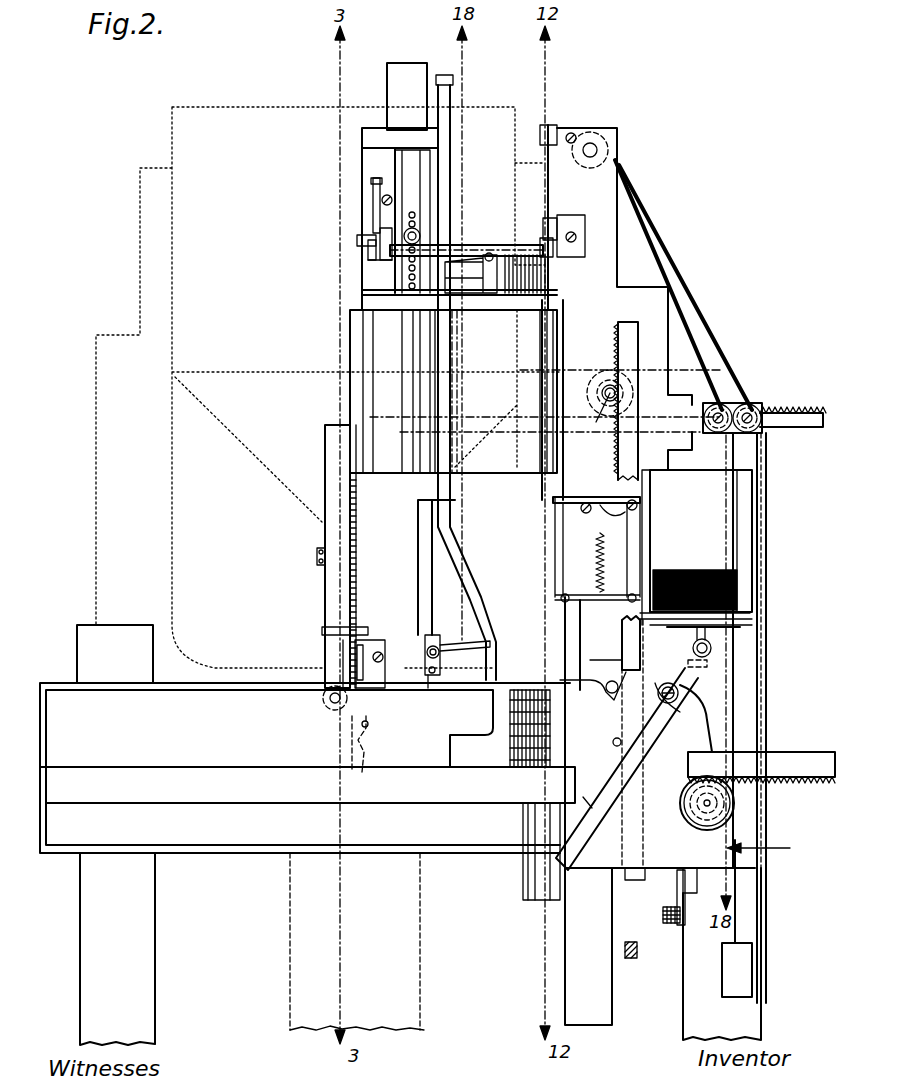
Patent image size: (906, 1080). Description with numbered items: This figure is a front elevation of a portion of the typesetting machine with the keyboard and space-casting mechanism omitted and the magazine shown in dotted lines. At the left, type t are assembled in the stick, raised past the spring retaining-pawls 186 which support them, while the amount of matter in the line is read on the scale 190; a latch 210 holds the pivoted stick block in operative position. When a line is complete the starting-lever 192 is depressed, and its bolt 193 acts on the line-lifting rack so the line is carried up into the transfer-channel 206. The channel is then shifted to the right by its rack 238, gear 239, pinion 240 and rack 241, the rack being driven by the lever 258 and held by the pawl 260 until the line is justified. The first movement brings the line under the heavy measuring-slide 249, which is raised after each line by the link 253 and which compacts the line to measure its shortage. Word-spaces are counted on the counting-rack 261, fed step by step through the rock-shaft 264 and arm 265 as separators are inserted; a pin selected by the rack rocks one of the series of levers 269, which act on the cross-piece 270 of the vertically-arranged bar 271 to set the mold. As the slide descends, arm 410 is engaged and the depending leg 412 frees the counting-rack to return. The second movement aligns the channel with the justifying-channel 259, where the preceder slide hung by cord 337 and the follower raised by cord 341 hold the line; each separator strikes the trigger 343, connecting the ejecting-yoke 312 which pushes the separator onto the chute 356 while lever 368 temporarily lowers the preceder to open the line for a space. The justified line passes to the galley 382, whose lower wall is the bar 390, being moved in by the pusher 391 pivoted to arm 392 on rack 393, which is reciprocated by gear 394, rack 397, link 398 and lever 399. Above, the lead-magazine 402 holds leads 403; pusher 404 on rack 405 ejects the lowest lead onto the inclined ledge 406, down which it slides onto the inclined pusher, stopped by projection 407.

The type t is at (508, 750).
The spring retaining-pawls 186 is at (352, 628).
The scale 190 is at (352, 581).
The starting-lever 192 is at (458, 641).
The bolt 193 is at (427, 676).
The transfer-channel 206 is at (548, 322).
The latch 210 is at (317, 555).
The rack 238 is at (800, 402).
The gear 239 is at (604, 380).
The pinion 240 is at (608, 415).
The rack 241 is at (630, 343).
The measuring-slide 249 is at (398, 65).
The link 253 is at (452, 97).
The lever 258 is at (632, 962).
The justifying-channel 259 is at (563, 592).
The pawl 260 is at (616, 678).
The counting-rack 261 is at (370, 234).
The rock-shaft 264 is at (489, 250).
The arm 265 is at (384, 248).
The levers 269 is at (470, 258).
The cross-piece 270 is at (576, 237).
The vertically-arranged bar 271 is at (552, 182).
The ejecting-yoke 312 is at (590, 497).
The cord 337 is at (693, 322).
The cord 341 is at (690, 290).
The trigger 343 is at (597, 549).
The inclined chute 356 is at (522, 512).
The lever 368 is at (666, 613).
The galley 382 is at (305, 768).
The bar 390 is at (307, 906).
The pusher 391 is at (598, 790).
The arm 392 is at (700, 712).
The rack 393 is at (797, 762).
The gear 394 is at (736, 800).
The rack 397 is at (690, 878).
The link 398 is at (676, 900).
The lever 399 is at (666, 925).
The lead-magazine 402 is at (706, 503).
The leads 403 is at (737, 583).
The pusher 404 is at (742, 630).
The rack 405 is at (712, 652).
The inclined ledge 406 is at (680, 687).
The projection 407 is at (612, 742).
The arm 410 is at (392, 162).
The depending leg 412 is at (380, 195).